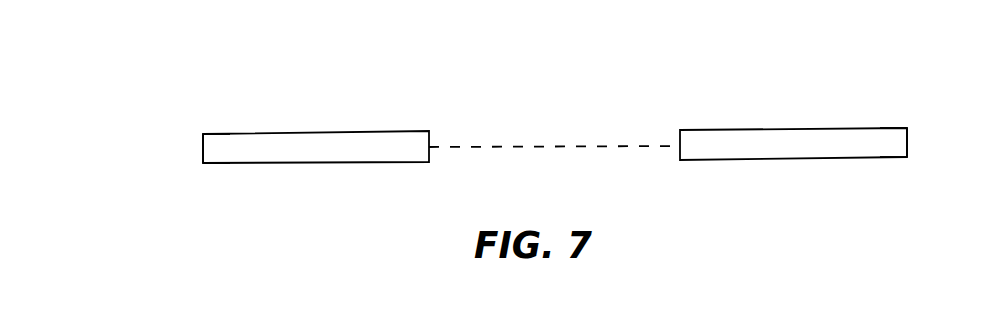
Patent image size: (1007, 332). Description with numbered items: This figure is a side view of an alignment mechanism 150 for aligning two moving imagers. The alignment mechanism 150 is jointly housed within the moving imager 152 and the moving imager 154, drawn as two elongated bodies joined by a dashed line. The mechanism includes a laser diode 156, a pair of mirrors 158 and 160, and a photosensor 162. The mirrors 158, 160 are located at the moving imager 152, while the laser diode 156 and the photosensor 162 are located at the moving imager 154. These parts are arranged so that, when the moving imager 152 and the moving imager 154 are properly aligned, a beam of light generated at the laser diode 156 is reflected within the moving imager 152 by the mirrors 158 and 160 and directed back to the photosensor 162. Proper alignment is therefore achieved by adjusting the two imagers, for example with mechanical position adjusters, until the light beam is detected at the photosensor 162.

The alignment mechanism 150 is at (489, 88).
The moving imager 152 is at (203, 152).
The moving imager 154 is at (907, 143).
The laser diode 156 is at (907, 157).
The mirror 158 is at (203, 163).
The mirror 160 is at (203, 134).
The photosensor 162 is at (907, 128).